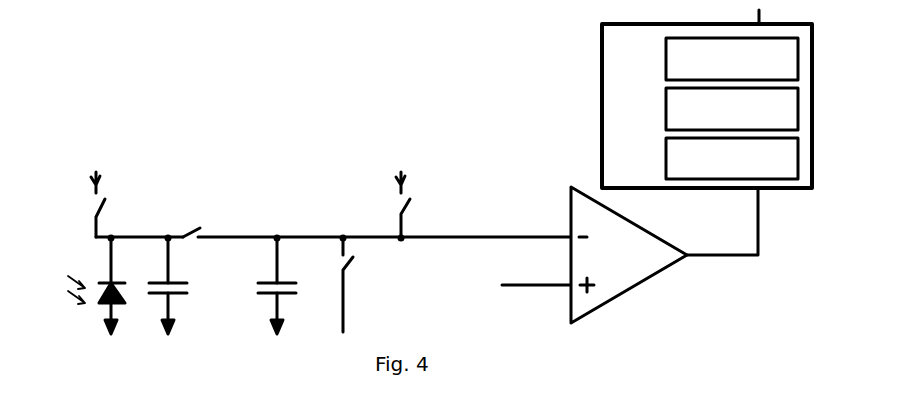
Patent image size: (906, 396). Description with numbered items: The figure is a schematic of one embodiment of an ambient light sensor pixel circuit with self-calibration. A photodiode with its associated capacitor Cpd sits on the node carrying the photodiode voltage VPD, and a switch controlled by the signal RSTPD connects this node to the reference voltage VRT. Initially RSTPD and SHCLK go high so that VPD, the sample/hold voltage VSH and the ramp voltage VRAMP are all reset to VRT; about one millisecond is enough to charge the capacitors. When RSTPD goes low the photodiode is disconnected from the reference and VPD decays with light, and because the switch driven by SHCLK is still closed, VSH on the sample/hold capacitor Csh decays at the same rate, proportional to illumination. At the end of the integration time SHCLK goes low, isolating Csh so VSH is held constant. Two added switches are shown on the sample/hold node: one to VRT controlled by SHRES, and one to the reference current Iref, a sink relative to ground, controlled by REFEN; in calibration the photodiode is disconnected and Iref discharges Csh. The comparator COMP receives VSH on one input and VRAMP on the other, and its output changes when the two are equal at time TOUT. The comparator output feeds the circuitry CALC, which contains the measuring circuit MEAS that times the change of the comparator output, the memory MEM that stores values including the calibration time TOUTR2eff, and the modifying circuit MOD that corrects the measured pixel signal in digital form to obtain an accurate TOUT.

The reference voltage VRT is at (245, 163).
The photodiode reset control signal RSTPD is at (66, 204).
The photodiode voltage VPD is at (137, 223).
The sample/hold clock signal SHCLK is at (207, 221).
The sample/hold reset signal SHRES is at (371, 207).
The reference enable signal REFEN is at (372, 284).
The reference current Iref is at (364, 315).
The photodiode capacitor Cpd is at (178, 285).
The sample/hold capacitor Csh is at (268, 285).
The sample/hold voltage VSH is at (516, 228).
The ramp voltage VRAMP is at (526, 270).
The comparator COMP is at (664, 255).
The calculation circuitry CALC is at (680, 99).
The modifying circuit MOD is at (706, 59).
The memory MEM is at (706, 109).
The measuring circuit MEAS is at (706, 158).
The measured calibration time value TOUTR2eff is at (719, 112).